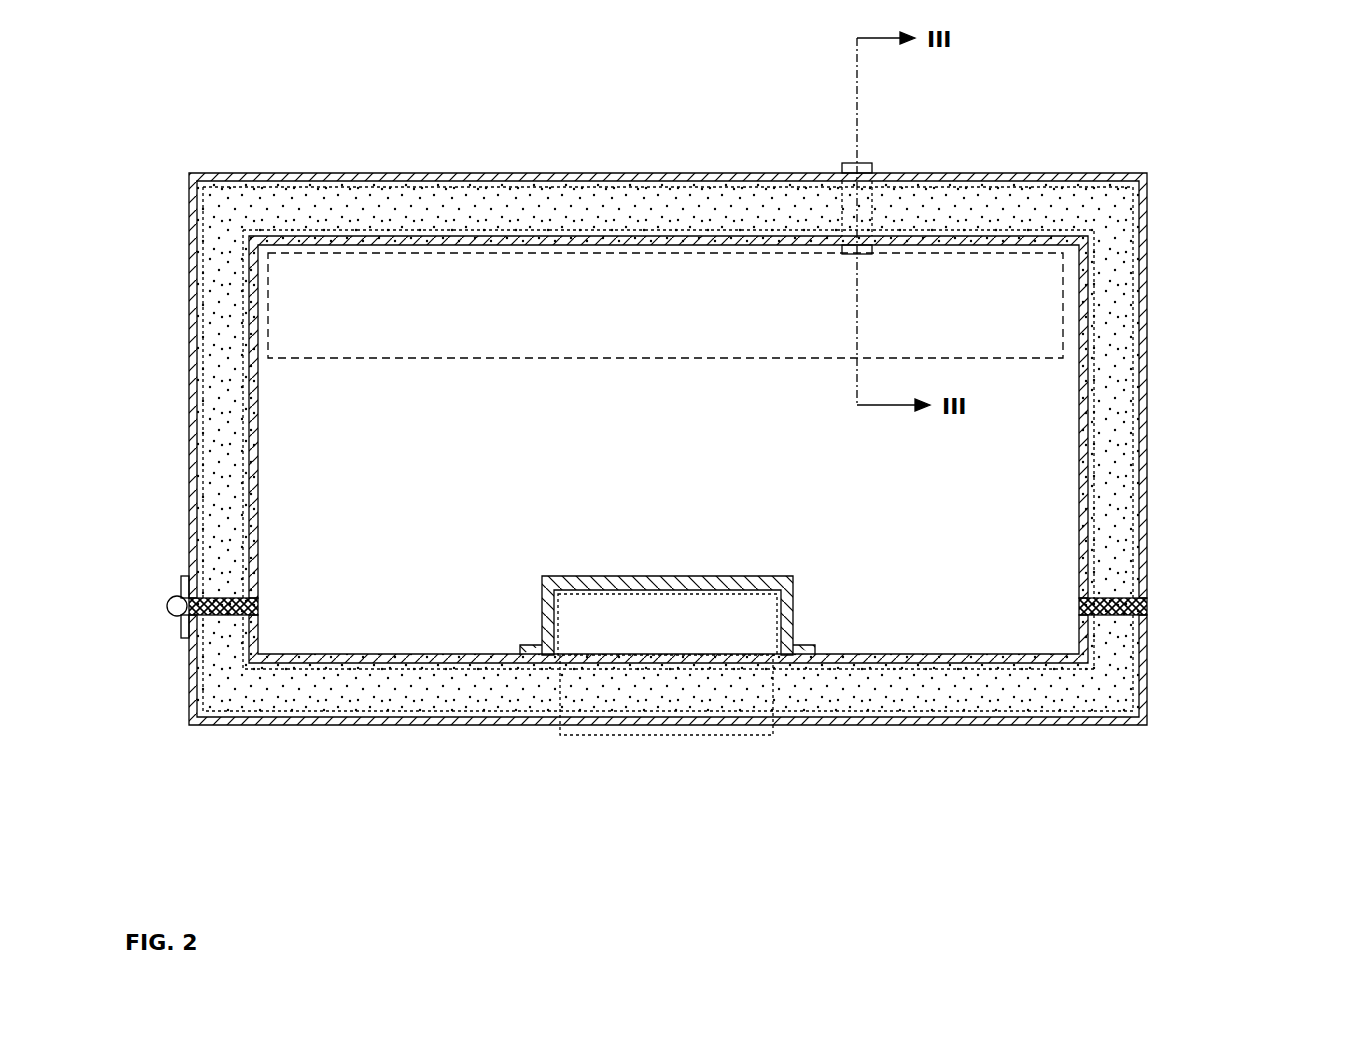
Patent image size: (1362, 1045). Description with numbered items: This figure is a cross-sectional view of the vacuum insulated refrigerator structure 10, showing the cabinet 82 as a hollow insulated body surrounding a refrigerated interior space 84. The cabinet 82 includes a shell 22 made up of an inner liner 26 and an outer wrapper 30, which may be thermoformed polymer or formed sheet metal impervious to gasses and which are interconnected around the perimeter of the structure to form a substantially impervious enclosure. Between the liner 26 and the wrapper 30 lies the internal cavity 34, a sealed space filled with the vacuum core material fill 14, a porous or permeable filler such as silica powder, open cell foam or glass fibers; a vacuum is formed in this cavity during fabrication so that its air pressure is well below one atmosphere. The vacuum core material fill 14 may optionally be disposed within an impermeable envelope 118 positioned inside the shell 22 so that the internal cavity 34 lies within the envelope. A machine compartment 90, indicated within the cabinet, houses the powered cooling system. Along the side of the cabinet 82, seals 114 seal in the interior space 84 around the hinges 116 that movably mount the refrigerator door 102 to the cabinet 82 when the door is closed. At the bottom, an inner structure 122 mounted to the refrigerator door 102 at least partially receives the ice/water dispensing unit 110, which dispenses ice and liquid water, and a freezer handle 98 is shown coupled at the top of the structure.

The vacuum insulated refrigerator structure 10 is at (1188, 183).
The vacuum core material fill 14 is at (558, 200).
The shell 22 is at (276, 165).
The liner 26 is at (428, 245).
The outer wrapper 30 is at (400, 172).
The internal cavity 34 is at (1002, 195).
The cabinet 82 is at (1156, 320).
The interior space 84 is at (333, 440).
The machine compartment 90 is at (1063, 290).
The freezer handle 98 is at (912, 173).
The refrigerator door 102 is at (944, 738).
The ice/water dispensing unit 110 is at (578, 732).
The seal 114 is at (258, 600).
The hinge 116 is at (178, 622).
The impermeable envelope 118 is at (708, 182).
The inner structure 122 is at (738, 576).